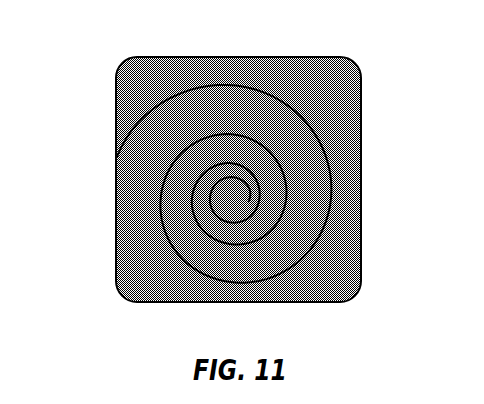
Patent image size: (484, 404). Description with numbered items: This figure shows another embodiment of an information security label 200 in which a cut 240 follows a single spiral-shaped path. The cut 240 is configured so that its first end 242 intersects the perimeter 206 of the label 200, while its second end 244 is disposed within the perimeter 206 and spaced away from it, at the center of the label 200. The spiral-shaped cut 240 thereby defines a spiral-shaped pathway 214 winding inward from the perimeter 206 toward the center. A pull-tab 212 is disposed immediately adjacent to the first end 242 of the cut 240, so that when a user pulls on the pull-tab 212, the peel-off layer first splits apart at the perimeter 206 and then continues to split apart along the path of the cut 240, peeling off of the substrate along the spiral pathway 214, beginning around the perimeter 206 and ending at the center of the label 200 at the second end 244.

The label 200 is at (237, 178).
The perimeter 206 is at (237, 178).
The pull-tab 212 is at (121, 86).
The pathway 214 is at (231, 178).
The cut 240 is at (236, 150).
The first end 242 is at (236, 184).
The second end 244 is at (249, 197).